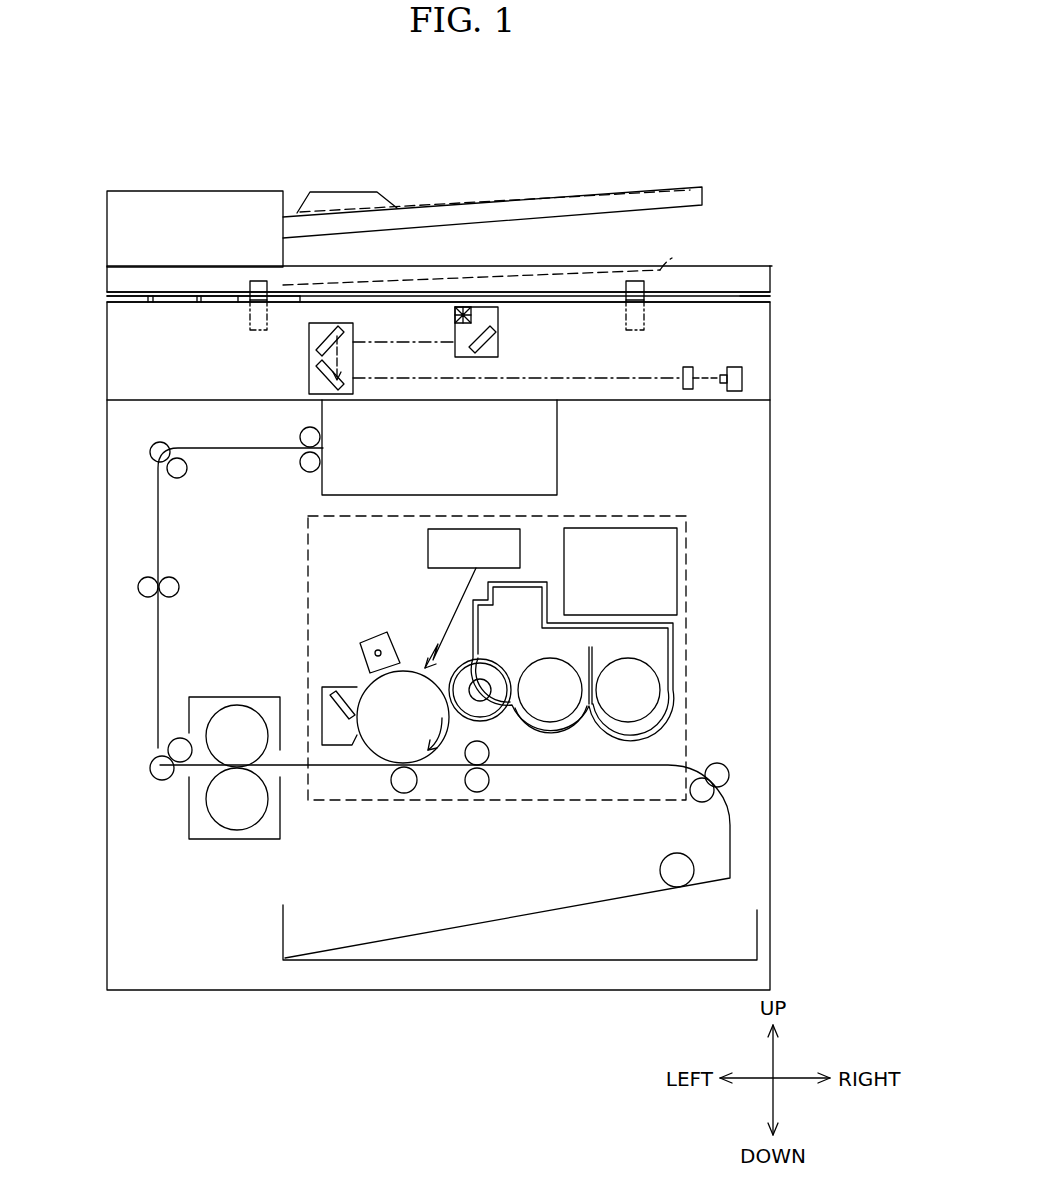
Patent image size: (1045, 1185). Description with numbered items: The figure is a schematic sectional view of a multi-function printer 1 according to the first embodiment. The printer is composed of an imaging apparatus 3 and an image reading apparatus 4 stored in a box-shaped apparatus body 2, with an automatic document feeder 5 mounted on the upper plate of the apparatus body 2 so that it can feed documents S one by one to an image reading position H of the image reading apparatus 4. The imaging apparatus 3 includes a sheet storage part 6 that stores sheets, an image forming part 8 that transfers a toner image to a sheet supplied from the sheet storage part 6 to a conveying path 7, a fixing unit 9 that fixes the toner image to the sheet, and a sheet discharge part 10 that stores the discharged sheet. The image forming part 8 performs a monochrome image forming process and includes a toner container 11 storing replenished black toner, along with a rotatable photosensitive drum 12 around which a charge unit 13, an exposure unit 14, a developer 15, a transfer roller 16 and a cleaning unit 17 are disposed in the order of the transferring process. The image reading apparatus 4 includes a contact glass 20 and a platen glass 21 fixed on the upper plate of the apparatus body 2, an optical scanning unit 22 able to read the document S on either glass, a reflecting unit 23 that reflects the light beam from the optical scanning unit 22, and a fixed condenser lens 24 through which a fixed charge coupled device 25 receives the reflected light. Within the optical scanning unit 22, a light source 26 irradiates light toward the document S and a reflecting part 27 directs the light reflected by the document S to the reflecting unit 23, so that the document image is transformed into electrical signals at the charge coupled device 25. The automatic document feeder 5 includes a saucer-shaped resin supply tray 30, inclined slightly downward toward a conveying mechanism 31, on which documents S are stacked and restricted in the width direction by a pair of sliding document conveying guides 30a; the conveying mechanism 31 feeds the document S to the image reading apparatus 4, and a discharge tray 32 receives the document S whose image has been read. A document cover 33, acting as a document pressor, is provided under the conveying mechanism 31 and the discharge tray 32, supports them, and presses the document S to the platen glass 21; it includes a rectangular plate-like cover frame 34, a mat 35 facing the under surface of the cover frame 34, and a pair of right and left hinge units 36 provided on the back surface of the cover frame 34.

The multi-function printer 1 is at (733, 84).
The apparatus body 2 is at (772, 437).
The imaging apparatus 3 is at (712, 497).
The image reading apparatus 4 is at (777, 367).
The automatic document feeder 5 is at (476, 194).
The sheet storage part 6 is at (757, 930).
The conveying path 7 is at (733, 830).
The image forming part 8 is at (690, 643).
The fixing unit 9 is at (200, 854).
The sheet discharge part 10 is at (478, 490).
The toner container 11 is at (677, 565).
The photosensitive drum 12 is at (371, 755).
The charge unit 13 is at (368, 632).
The exposure unit 14 is at (428, 540).
The developer 15 is at (520, 732).
The transfer roller 16 is at (405, 795).
The cleaning unit 17 is at (326, 685).
The contact glass 20 is at (148, 300).
The platen glass 21 is at (772, 302).
The optical scanning unit 22 is at (449, 350).
The reflecting unit 23 is at (308, 362).
The condenser lens 24 is at (682, 373).
The charge coupled device 25 is at (733, 366).
The light source 26 is at (452, 318).
The reflecting part 27 is at (500, 345).
The supply tray 30 is at (700, 187).
The document conveying guides 30a is at (325, 190).
The conveying mechanism 31 is at (200, 190).
The discharge tray 32 is at (662, 268).
The document cover 33 is at (757, 259).
The cover frame 34 is at (772, 265).
The mat 35 is at (510, 292).
The hinge units 36 is at (258, 281).
The document S is at (493, 200).
The image reading position H is at (180, 322).